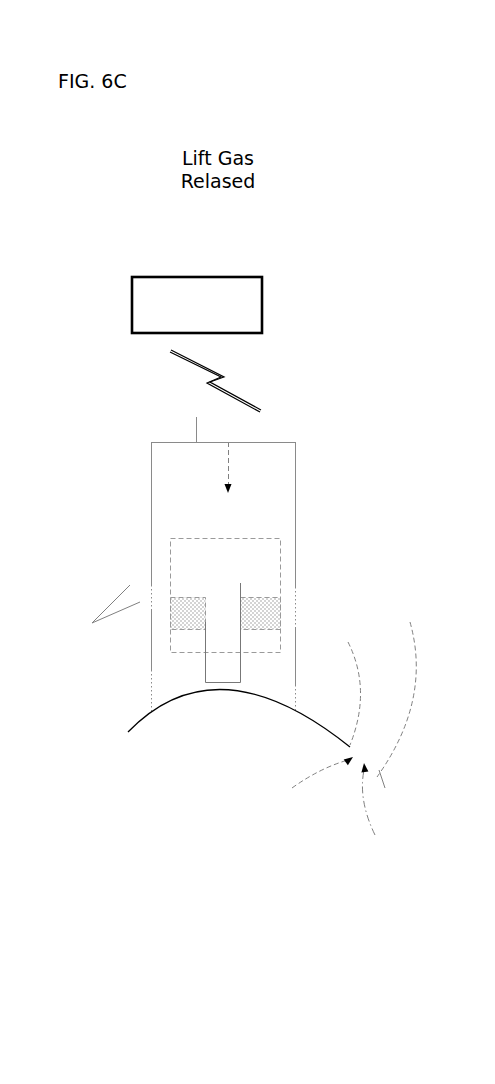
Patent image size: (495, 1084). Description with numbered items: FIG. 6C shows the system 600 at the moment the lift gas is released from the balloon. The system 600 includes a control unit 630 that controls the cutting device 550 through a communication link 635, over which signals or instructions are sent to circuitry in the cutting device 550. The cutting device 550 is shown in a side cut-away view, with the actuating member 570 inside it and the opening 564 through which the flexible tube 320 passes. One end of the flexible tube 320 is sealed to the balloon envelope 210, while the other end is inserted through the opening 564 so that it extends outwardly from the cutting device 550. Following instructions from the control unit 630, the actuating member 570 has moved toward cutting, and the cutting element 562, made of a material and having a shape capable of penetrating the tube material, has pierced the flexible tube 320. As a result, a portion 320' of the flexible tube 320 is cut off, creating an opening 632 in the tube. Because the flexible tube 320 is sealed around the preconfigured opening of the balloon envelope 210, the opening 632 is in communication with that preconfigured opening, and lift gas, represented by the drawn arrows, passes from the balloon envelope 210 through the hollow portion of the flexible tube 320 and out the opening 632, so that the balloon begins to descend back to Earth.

The system 600 is at (316, 92).
The control unit 630 is at (198, 276).
The communication link 635 is at (218, 385).
The cutting device 550 is at (152, 437).
The actuating member 570 is at (192, 538).
The opening 564 is at (295, 585).
The cutting element 562 is at (205, 622).
The portion of the flexible tube 320' is at (96, 561).
The balloon envelope 210 is at (125, 708).
The opening 632 is at (383, 652).
The flexible tube 320 is at (412, 787).